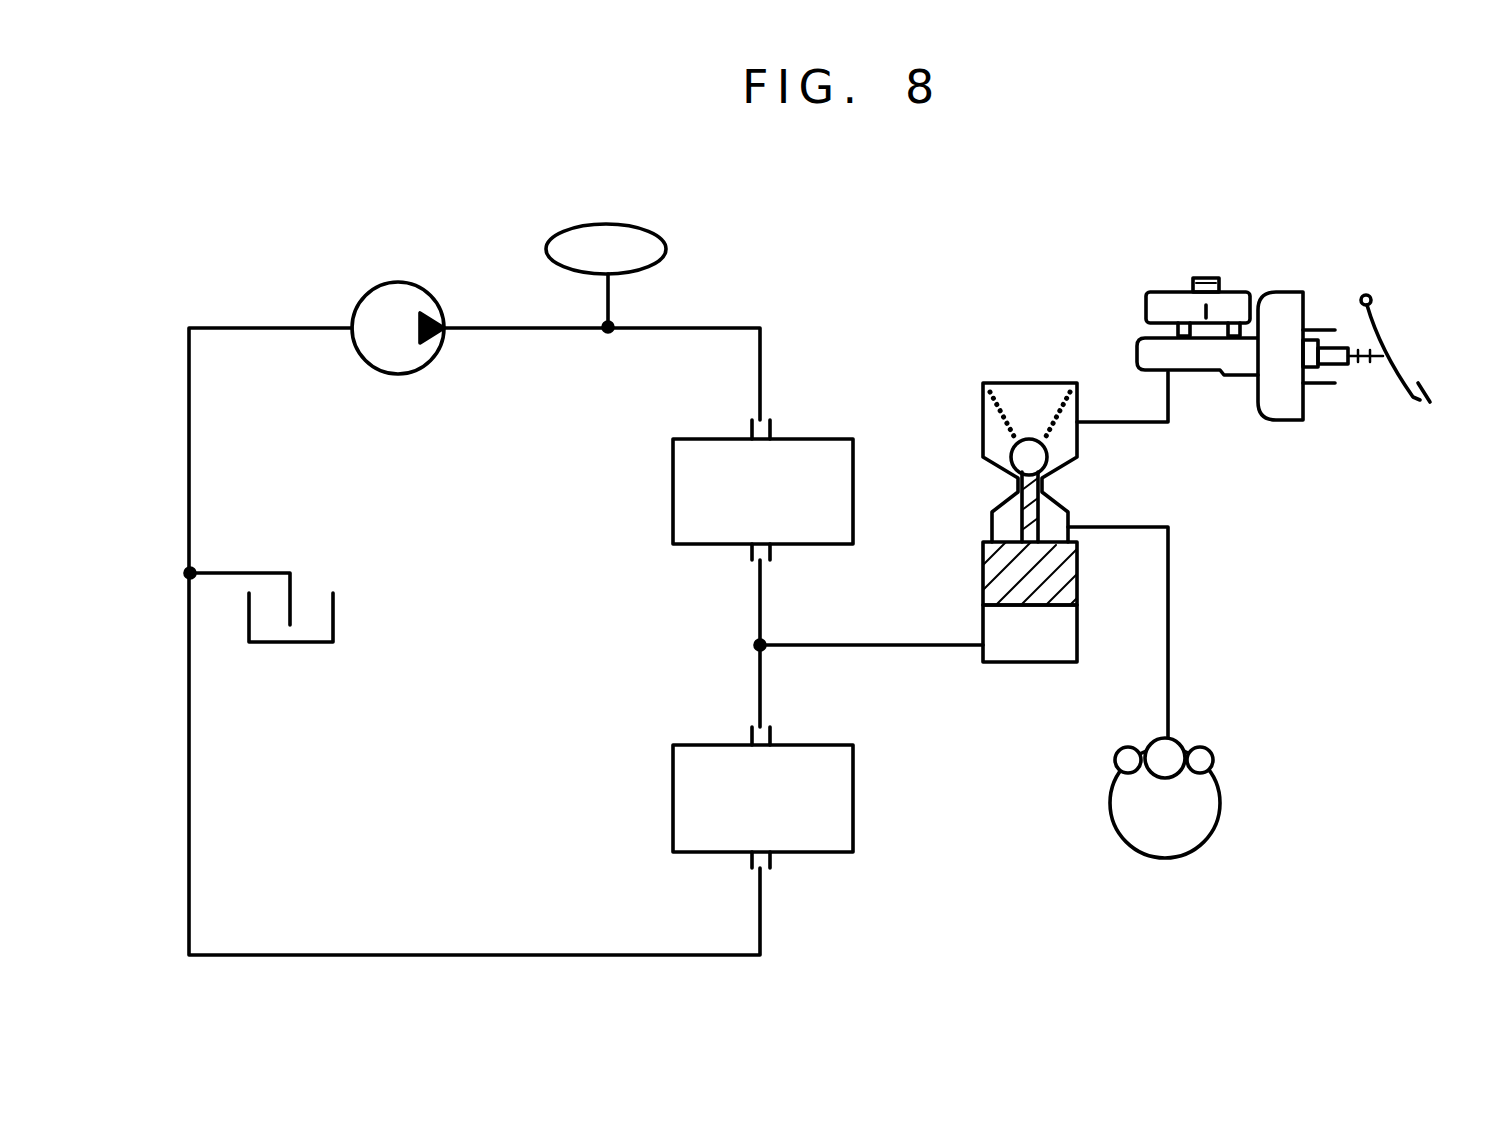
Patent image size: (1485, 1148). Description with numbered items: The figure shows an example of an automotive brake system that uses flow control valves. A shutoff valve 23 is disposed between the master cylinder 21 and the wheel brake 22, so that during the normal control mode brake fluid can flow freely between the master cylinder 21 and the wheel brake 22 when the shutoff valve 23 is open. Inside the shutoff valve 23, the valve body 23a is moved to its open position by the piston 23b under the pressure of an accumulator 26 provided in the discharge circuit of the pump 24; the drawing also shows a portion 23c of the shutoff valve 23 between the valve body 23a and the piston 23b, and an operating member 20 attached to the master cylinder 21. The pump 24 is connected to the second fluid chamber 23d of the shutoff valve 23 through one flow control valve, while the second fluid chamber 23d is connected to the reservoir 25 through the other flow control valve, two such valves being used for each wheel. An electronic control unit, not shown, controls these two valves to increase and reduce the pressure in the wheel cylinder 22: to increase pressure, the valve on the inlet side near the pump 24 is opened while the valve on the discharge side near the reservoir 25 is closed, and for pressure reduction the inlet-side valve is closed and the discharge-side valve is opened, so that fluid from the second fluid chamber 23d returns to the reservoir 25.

The brake pedal 20 is at (1420, 392).
The master cylinder 21 is at (1148, 352).
The wheel brake 22 is at (1167, 752).
The shutoff valve 23 is at (1090, 526).
The valve body 23a is at (1029, 446).
The piston 23b is at (1045, 586).
The valve rod 23c is at (1057, 521).
The second fluid chamber 23d is at (1040, 648).
The pump 24 is at (420, 291).
The reservoir 25 is at (314, 623).
The accumulator 26 is at (668, 250).